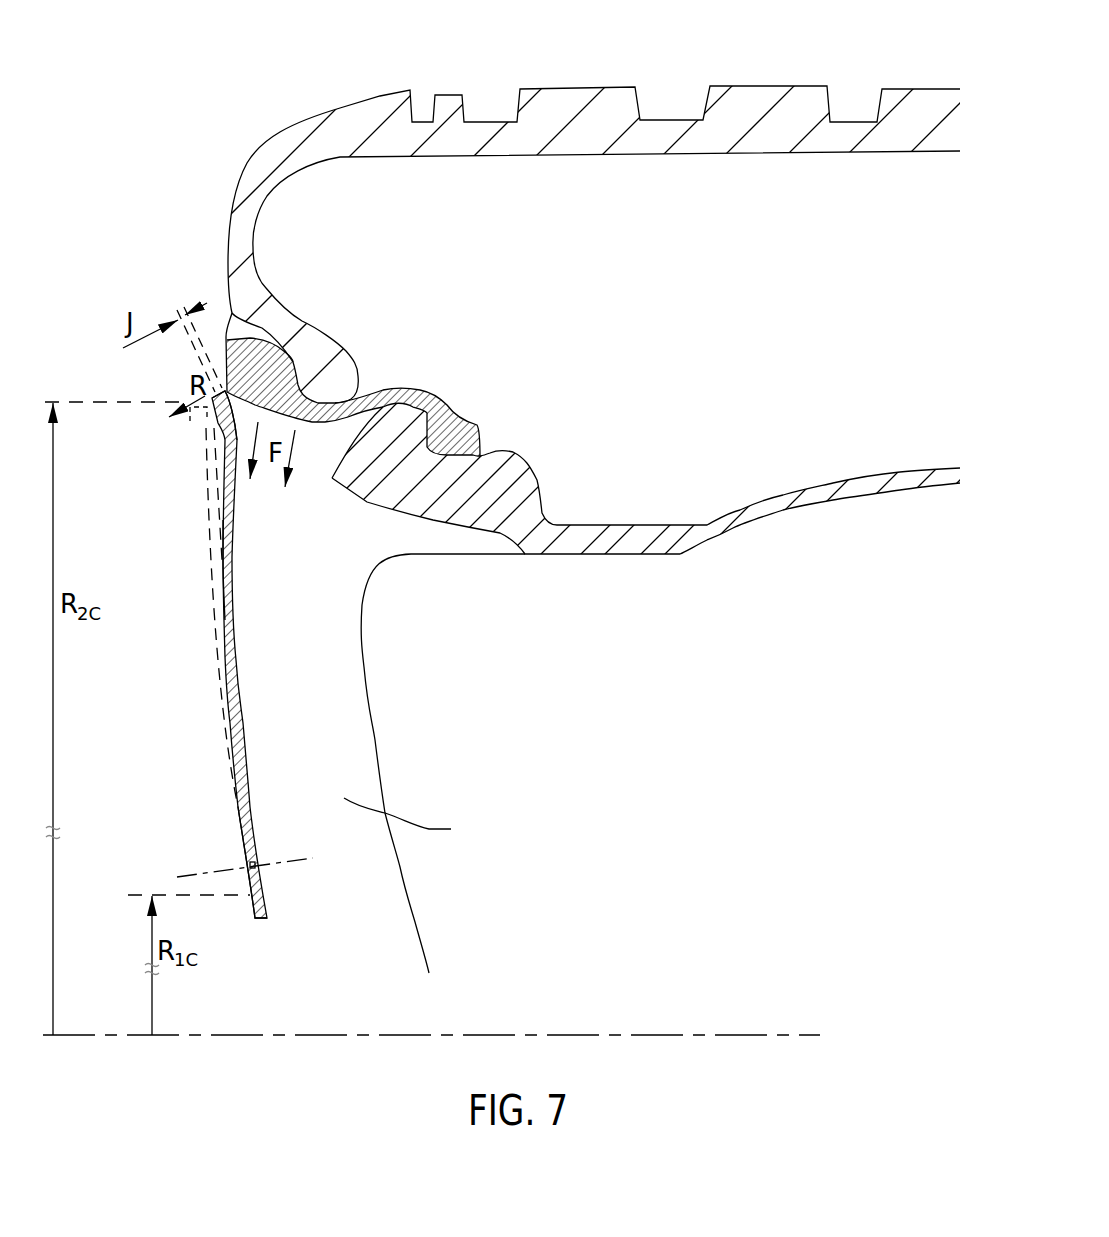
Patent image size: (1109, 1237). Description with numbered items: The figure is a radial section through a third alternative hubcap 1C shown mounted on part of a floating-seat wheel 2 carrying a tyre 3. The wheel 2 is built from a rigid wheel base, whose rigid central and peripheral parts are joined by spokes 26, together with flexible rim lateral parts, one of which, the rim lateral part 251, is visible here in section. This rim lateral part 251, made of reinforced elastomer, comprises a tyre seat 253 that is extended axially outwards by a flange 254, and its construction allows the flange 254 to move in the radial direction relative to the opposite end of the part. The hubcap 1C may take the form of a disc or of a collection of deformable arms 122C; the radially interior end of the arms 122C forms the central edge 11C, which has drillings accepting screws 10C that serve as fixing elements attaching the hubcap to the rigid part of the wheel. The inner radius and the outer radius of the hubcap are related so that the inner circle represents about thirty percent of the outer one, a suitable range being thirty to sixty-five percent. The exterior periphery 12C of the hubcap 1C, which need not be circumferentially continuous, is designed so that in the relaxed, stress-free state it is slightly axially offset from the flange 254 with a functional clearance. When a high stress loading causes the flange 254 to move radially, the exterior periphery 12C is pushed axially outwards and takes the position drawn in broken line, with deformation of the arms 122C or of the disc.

The tire 3 is at (766, 107).
The floating-seat wheel 2 is at (673, 723).
The spoke 26 is at (411, 820).
The rim lateral part 251 is at (418, 402).
The tyre seat 253 is at (335, 401).
The flange 254 is at (258, 370).
The hubcap 1C is at (211, 637).
The screws 10C is at (290, 862).
The central edge 11C is at (232, 856).
The exterior periphery 12C is at (216, 424).
The arms 122C is at (229, 556).